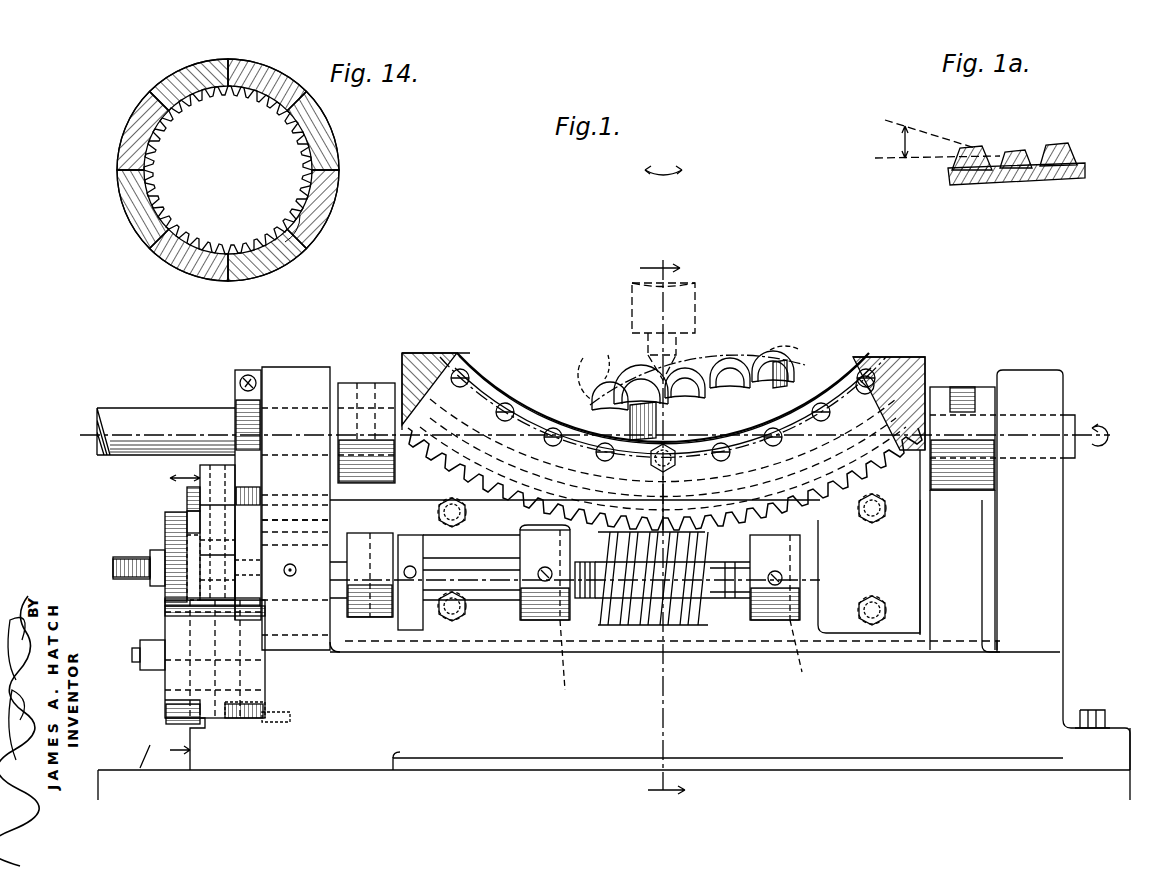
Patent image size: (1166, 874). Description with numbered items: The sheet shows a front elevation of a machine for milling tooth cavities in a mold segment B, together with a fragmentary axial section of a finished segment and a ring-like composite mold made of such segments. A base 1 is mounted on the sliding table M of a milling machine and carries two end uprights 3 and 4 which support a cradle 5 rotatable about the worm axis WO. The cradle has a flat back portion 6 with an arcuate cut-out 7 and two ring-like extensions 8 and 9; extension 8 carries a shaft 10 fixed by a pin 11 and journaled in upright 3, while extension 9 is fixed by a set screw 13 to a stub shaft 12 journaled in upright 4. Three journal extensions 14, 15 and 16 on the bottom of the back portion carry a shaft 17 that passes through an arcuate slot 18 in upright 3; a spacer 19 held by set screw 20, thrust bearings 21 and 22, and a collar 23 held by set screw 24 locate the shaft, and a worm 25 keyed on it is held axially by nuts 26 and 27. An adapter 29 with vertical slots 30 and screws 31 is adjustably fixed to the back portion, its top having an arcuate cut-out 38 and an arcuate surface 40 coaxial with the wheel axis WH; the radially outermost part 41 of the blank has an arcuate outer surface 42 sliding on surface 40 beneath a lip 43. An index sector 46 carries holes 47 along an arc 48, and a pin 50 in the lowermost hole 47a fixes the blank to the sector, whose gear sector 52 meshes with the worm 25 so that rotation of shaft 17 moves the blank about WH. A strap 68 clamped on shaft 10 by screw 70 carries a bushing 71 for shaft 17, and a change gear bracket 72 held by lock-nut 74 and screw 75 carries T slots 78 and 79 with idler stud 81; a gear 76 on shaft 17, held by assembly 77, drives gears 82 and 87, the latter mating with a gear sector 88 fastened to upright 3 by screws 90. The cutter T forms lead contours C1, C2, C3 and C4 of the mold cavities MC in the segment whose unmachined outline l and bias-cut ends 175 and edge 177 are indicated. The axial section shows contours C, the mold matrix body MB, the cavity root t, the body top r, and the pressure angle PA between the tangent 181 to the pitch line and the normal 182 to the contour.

In FIG. 1, the base 1 is at (587, 752).
In FIG. 1, the end upright 3 is at (276, 366).
In FIG. 1, the end upright 4 is at (1030, 370).
In FIG. 1, the cradle 5 is at (490, 664).
In FIG. 1, the back portion 6 is at (657, 529).
In FIG. 1, the arcuate cut-out 7 is at (858, 352).
In FIG. 1, the ring-like extension 8 is at (348, 382).
In FIG. 1, the ring-like extension 9 is at (984, 386).
In FIG. 1, the shaft 10 is at (203, 408).
In FIG. 1, the pin 11 is at (372, 382).
In FIG. 1, the stub shaft 12 is at (262, 555).
In FIG. 1, the set screw 13 is at (960, 386).
In FIG. 1, the journal extension 14 is at (358, 618).
In FIG. 1, the journal extension 15 is at (548, 622).
In FIG. 1, the journal extension 16 is at (772, 622).
In FIG. 1, the shaft 17 is at (420, 630).
In FIG. 1, the arcuate slot 18 is at (312, 528).
In FIG. 1, the spacer 19 is at (300, 525).
In FIG. 1, the set screw 20 is at (290, 562).
In FIG. 1, the thrust bearing 21 is at (340, 558).
In FIG. 1, the thrust bearing 22 is at (406, 540).
In FIG. 1, the collar 23 is at (425, 545).
In FIG. 1, the set screw 24 is at (418, 572).
In FIG. 1, the worm 25 is at (688, 625).
In FIG. 1, the nut 26 is at (612, 600).
In FIG. 1, the nut 27 is at (722, 600).
In FIG. 1, the adapter 29 is at (846, 626).
In FIG. 1, the vertically extending slots 30 is at (462, 530).
In FIG. 1, the screws 31 is at (466, 512).
In FIG. 1, the arcuate cut-out 38 is at (856, 356).
In FIG. 1, the arcuately-formed surface 40 is at (560, 462).
In FIG. 14, the radially outermost part of blank 41 is at (338, 160).
In FIG. 1, the radially outermost part of blank 41 is at (663, 403).
In FIG. 1, the arcuate outer surface 42 is at (612, 476).
In FIG. 1, the arcuately-shaped lip 43 is at (560, 408).
In FIG. 1, the index sector 46 is at (432, 352).
In FIG. 1, the index holes 47 is at (464, 369).
In FIG. 1, the lowermost hole 47a is at (658, 472).
In FIG. 1, the arc 48 is at (880, 370).
In FIG. 1, the pin 50 is at (676, 466).
In FIG. 1, the gear sector 52 is at (870, 500).
In FIG. 1, the strap 68 is at (238, 398).
In FIG. 1, the screw 70 is at (250, 374).
In FIG. 1, the bushing 71 is at (243, 560).
In FIG. 1, the change gear bracket 72 is at (182, 468).
In FIG. 1, the lock-nut 74 is at (190, 525).
In FIG. 1, the screw 75 is at (188, 505).
In FIG. 1, the gear 76 is at (165, 530).
In FIG. 1, the nut and lock washer assembly 77 is at (152, 558).
In FIG. 1, the T slot 78 is at (210, 538).
In FIG. 1, the T slot 79 is at (236, 665).
In FIG. 1, the idler stud 81 is at (138, 648).
In FIG. 1, the gear 82 is at (168, 515).
In FIG. 1, the gear 87 is at (165, 705).
In FIG. 1, the arcuate gear sector 88 is at (166, 720).
In FIG. 1, the screws 90 is at (282, 724).
In FIG. 1, the bias end 175 is at (600, 410).
In FIG. 1, the edge 177 is at (681, 373).
In FIG. 1A, the tangent to pitch line 181 is at (895, 160).
In FIG. 1A, the normal to contour 182 is at (892, 118).
In FIG. 14, the mold segment B is at (315, 235).
In FIG. 1A, the mold segment B is at (952, 186).
In FIG. 1, the mold segment B is at (596, 380).
In FIG. 1A, the mold contour C is at (1000, 150).
In FIG. 1, the lead contour C1 is at (632, 378).
In FIG. 1, the lead contour C2 is at (680, 380).
In FIG. 1, the lead contour C3 is at (730, 362).
In FIG. 1, the lead contour C4 is at (776, 356).
In FIG. 14, the mold cavities MC is at (295, 200).
In FIG. 1A, the mold cavities MC is at (1005, 160).
In FIG. 1, the mold cavities MC is at (745, 354).
In FIG. 1A, the mold matrix body MB is at (1015, 168).
In FIG. 1, the sliding table M is at (164, 755).
In FIG. 1A, the pressure angle PA is at (901, 142).
In FIG. 1, the rotary end mill cutter T is at (707, 297).
In FIG. 1, the worm wheel axis WH is at (672, 160).
In FIG. 1, the worm axis WO is at (1075, 430).
In FIG. 1, the blank outline l is at (603, 356).
In FIG. 1A, the top of mold body r is at (978, 150).
In FIG. 1, the top of mold body r is at (808, 345).
In FIG. 1A, the cavity root t is at (978, 185).